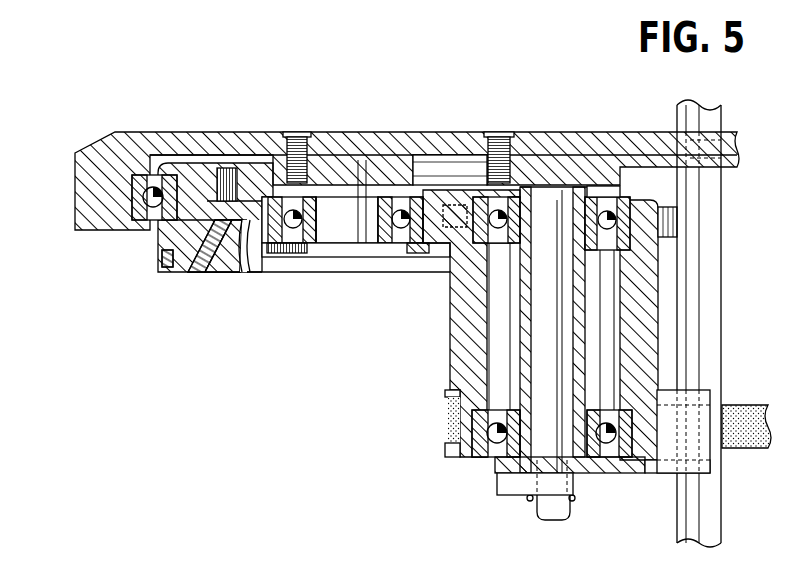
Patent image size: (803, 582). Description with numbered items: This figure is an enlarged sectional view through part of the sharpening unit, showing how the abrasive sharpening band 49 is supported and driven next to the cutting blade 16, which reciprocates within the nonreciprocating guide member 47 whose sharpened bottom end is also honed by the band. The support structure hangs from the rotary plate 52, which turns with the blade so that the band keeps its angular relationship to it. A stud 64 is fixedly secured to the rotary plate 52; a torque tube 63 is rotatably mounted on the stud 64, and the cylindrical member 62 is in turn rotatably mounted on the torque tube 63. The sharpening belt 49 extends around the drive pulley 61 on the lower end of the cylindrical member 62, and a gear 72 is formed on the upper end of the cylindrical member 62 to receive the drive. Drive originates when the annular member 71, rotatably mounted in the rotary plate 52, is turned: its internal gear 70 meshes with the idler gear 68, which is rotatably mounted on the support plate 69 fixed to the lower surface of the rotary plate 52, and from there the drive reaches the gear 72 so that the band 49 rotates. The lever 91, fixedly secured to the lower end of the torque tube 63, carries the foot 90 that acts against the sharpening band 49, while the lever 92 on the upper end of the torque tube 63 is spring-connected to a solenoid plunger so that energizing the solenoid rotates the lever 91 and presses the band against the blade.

The cutting blade 16 is at (671, 533).
The guide member 47 is at (723, 527).
The sharpening band 49 is at (742, 450).
The rotary plate 52 is at (70, 213).
The drive pulley 61 is at (445, 452).
The cylindrical member 62 is at (446, 345).
The torque tube 63 is at (516, 295).
The stud 64 is at (567, 342).
The idler gear 68 is at (248, 272).
The support plate 69 is at (278, 156).
The internal gear 70 is at (226, 265).
The annular member 71 is at (202, 272).
The gear 72 is at (676, 218).
The foot 90 is at (712, 397).
The lever 91 is at (490, 468).
The lever 92 is at (618, 195).